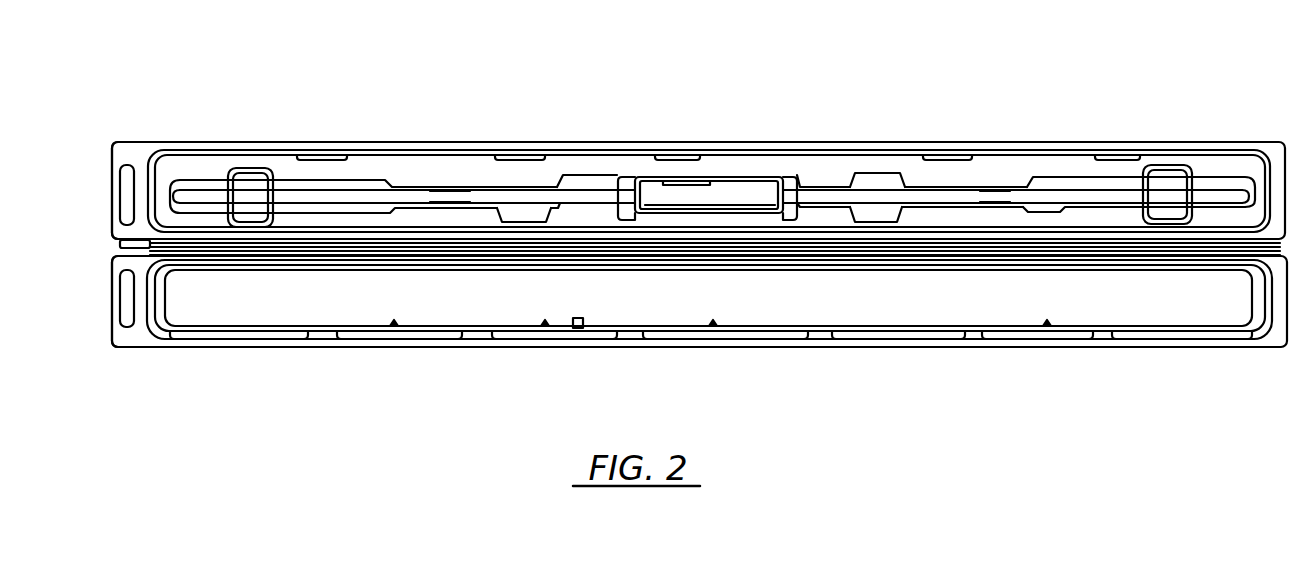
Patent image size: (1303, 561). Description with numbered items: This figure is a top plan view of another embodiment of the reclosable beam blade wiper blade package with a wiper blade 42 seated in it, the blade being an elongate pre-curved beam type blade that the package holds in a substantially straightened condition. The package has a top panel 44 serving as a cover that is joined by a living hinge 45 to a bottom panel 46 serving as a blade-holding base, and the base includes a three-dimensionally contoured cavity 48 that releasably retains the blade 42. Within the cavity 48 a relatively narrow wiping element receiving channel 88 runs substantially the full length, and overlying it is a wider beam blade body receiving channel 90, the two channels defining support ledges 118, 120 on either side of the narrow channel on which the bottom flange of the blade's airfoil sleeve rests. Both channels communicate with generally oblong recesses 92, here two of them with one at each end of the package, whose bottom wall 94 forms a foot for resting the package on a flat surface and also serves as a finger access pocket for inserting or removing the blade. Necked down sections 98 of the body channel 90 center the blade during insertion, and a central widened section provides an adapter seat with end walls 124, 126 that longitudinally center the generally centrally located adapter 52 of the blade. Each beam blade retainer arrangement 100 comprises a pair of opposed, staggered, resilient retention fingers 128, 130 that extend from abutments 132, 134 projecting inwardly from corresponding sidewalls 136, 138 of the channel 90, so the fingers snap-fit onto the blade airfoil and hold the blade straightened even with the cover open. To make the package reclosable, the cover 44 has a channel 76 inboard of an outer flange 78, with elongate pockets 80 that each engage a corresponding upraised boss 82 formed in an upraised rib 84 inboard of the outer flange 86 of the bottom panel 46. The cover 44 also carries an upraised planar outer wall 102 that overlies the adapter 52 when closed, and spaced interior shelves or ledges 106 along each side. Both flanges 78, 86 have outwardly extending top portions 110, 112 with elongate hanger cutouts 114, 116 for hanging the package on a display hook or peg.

The wiper blade 42 is at (1090, 185).
The top panel 44 is at (1207, 347).
The living hinge 45 is at (125, 246).
The bottom panel 46 is at (1202, 140).
The cavity 48 is at (1238, 172).
The adapter 52 is at (722, 183).
The channel 76 is at (215, 337).
The outer flange 78 is at (158, 349).
The elongate pockets 80 is at (355, 337).
The upraised boss 82 is at (297, 152).
The upraised rib 84 is at (203, 150).
The outer flange 86 is at (163, 150).
The wiping element receiving channel 88 is at (410, 189).
The beam blade body receiving channel 90 is at (380, 181).
The recesses 92 is at (240, 170).
The bottom wall 94 is at (255, 183).
The necked down section 98 is at (450, 205).
The beam blade retainer arrangement 100 is at (522, 172).
The outer wall 102 is at (323, 314).
The shelves or ledges 106 is at (208, 265).
The top portion 110 is at (125, 342).
The top portion 112 is at (130, 148).
The hanger cutout 114 is at (128, 305).
The hanger cutout 116 is at (122, 177).
The support ledge 118 is at (1047, 177).
The support ledge 120 is at (1063, 208).
The end wall 124 is at (780, 175).
The end wall 126 is at (622, 175).
The beam blade retention finger 128 is at (547, 183).
The beam blade retention finger 130 is at (577, 213).
The abutment 132 is at (867, 173).
The abutment 134 is at (610, 218).
The sidewall 136 is at (826, 172).
The sidewall 138 is at (902, 213).